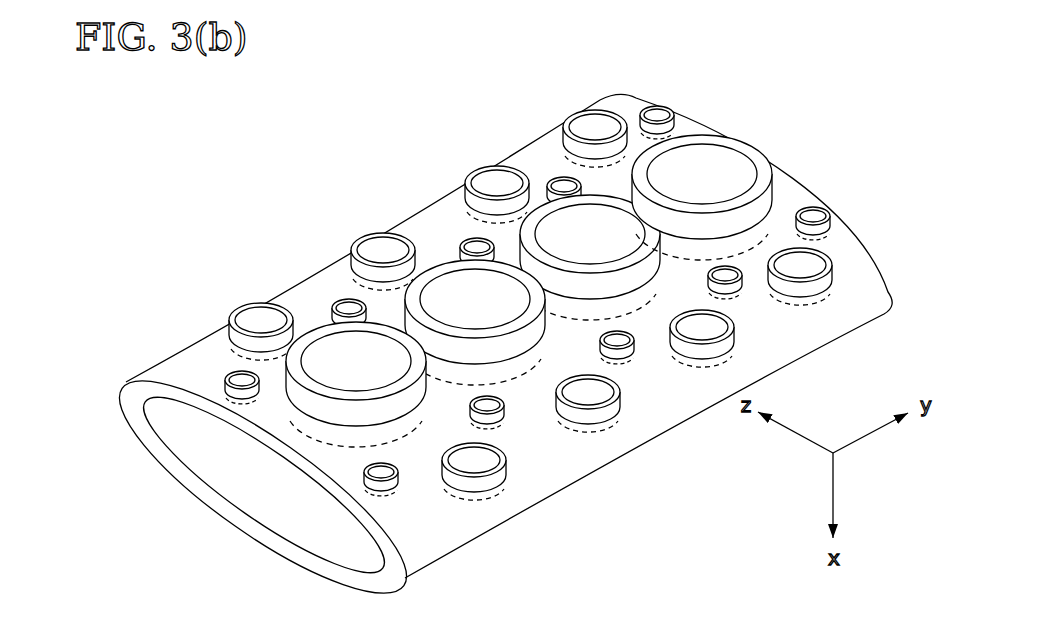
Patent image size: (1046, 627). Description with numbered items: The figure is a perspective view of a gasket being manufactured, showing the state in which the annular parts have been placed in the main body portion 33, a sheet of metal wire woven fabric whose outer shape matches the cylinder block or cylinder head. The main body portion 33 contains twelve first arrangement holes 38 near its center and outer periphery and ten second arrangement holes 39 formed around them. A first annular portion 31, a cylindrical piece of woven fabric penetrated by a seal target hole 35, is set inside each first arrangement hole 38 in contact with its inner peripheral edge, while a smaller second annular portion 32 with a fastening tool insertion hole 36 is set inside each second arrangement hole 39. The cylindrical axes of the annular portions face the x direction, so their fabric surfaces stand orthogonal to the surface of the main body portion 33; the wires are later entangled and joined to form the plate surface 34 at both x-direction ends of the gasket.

The first annular portion 31 is at (233, 301).
The second annular portion 32 is at (182, 348).
The main body portion 33 is at (281, 290).
The plate surface 34 is at (762, 345).
The seal target hole 35 is at (590, 127).
The fastening tool insertion hole 36 is at (621, 348).
The first arrangement hole 38 is at (597, 420).
The second arrangement hole 39 is at (497, 423).